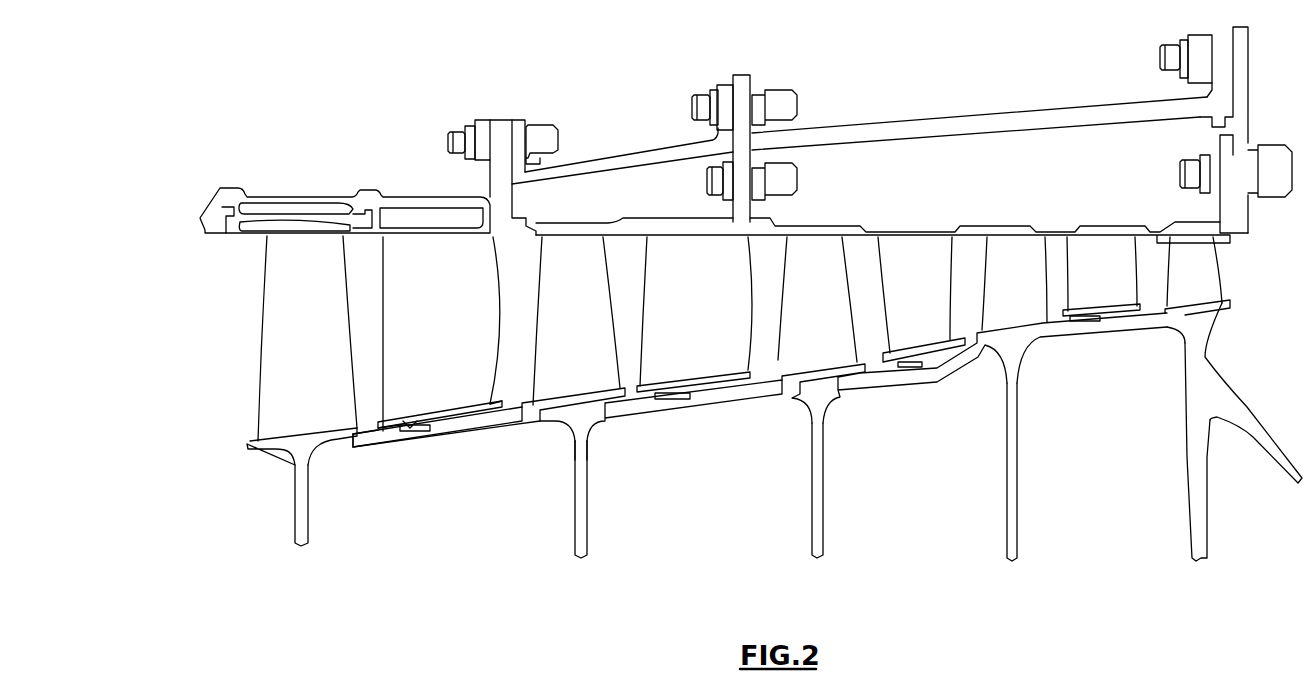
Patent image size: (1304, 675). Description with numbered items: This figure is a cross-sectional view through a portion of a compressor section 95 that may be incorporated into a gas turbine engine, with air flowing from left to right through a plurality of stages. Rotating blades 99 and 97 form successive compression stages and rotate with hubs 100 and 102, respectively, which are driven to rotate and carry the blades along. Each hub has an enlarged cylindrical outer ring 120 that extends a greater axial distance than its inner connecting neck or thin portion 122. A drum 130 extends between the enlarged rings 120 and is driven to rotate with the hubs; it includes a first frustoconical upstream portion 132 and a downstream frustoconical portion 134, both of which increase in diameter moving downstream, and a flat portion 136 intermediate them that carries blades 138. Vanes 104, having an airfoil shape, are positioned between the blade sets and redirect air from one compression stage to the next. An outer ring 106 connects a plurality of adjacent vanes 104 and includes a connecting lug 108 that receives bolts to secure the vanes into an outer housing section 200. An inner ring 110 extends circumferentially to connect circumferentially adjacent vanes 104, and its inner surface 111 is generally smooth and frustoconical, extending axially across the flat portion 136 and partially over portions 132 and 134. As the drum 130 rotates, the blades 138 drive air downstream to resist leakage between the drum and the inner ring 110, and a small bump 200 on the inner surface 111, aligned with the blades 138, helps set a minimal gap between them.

The compressor section 95 is at (577, 86).
The rotating blade 97 is at (605, 230).
The rotating blade 99 is at (270, 312).
The hub 100 is at (287, 447).
The hub 102 is at (593, 437).
The vane 104 is at (452, 290).
The outer ring 106 is at (490, 210).
The connecting lug 108 is at (499, 127).
The inner ring 110 is at (480, 405).
The inner surface 111 is at (462, 420).
The outer ring 120 is at (560, 410).
The connecting neck 122 is at (298, 505).
The drum 130 is at (408, 438).
The upstream frustoconical portion 132 is at (367, 427).
The downstream frustoconical portion 134 is at (497, 427).
The flat portion 136 is at (437, 440).
The blade 138 is at (410, 425).
The outer housing section 200 is at (362, 195).